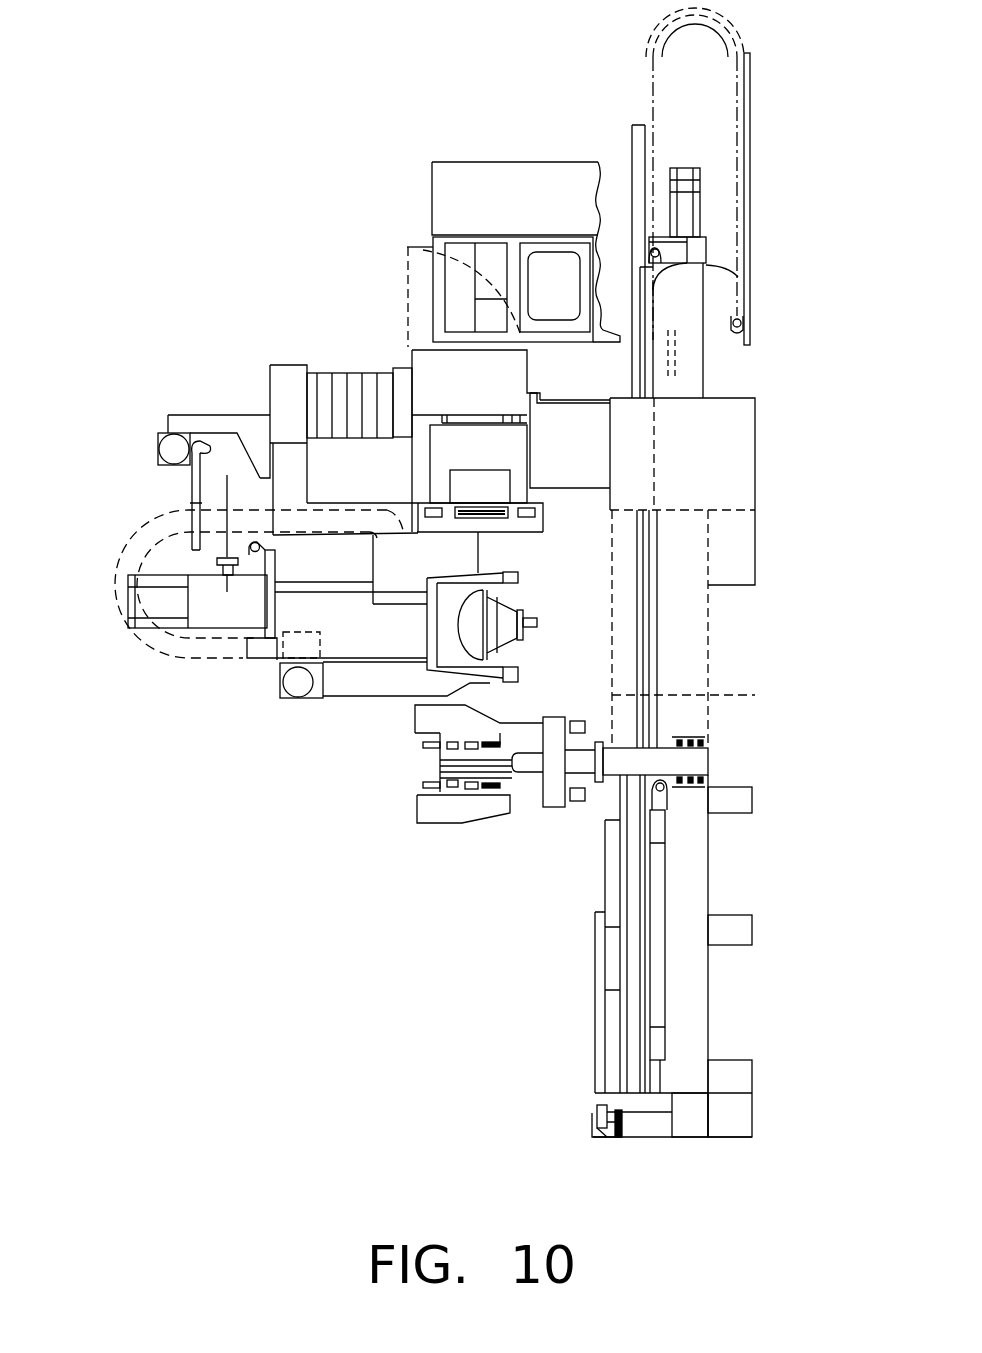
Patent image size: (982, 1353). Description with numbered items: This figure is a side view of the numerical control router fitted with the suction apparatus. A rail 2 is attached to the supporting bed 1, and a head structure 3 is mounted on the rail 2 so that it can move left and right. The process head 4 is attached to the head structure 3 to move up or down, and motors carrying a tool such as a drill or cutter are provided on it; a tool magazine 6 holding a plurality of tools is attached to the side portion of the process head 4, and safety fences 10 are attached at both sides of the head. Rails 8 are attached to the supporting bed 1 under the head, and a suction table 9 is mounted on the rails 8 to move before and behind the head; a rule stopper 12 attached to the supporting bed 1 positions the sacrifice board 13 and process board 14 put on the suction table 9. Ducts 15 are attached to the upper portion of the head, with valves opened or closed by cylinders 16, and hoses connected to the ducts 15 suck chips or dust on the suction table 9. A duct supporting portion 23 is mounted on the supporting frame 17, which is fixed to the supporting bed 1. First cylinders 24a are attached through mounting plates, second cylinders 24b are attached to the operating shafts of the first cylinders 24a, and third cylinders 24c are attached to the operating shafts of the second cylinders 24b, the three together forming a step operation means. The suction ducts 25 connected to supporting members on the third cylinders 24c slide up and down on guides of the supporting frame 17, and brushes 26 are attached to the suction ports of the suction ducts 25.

The supporting bed 1 is at (743, 430).
The rail 2 is at (472, 490).
The head structure 3 is at (327, 457).
The process head 4 is at (340, 638).
The tool magazine 6 is at (500, 558).
The rails 8 is at (658, 638).
The suction table 9 is at (633, 1015).
The safety fences 10 is at (708, 568).
The rule stopper 12 is at (590, 1137).
The sacrifice board 13 is at (615, 1038).
The process board 14 is at (600, 1078).
The ducts 15 is at (172, 450).
The cylinders 16 is at (187, 492).
The supporting frame 17 is at (703, 762).
The duct supporting portion 23 is at (450, 772).
The first cylinders 24a is at (423, 785).
The second cylinders 24b is at (462, 730).
The third cylinders 24c is at (492, 792).
The suction ducts 25 is at (415, 713).
The brushes 26 is at (587, 722).